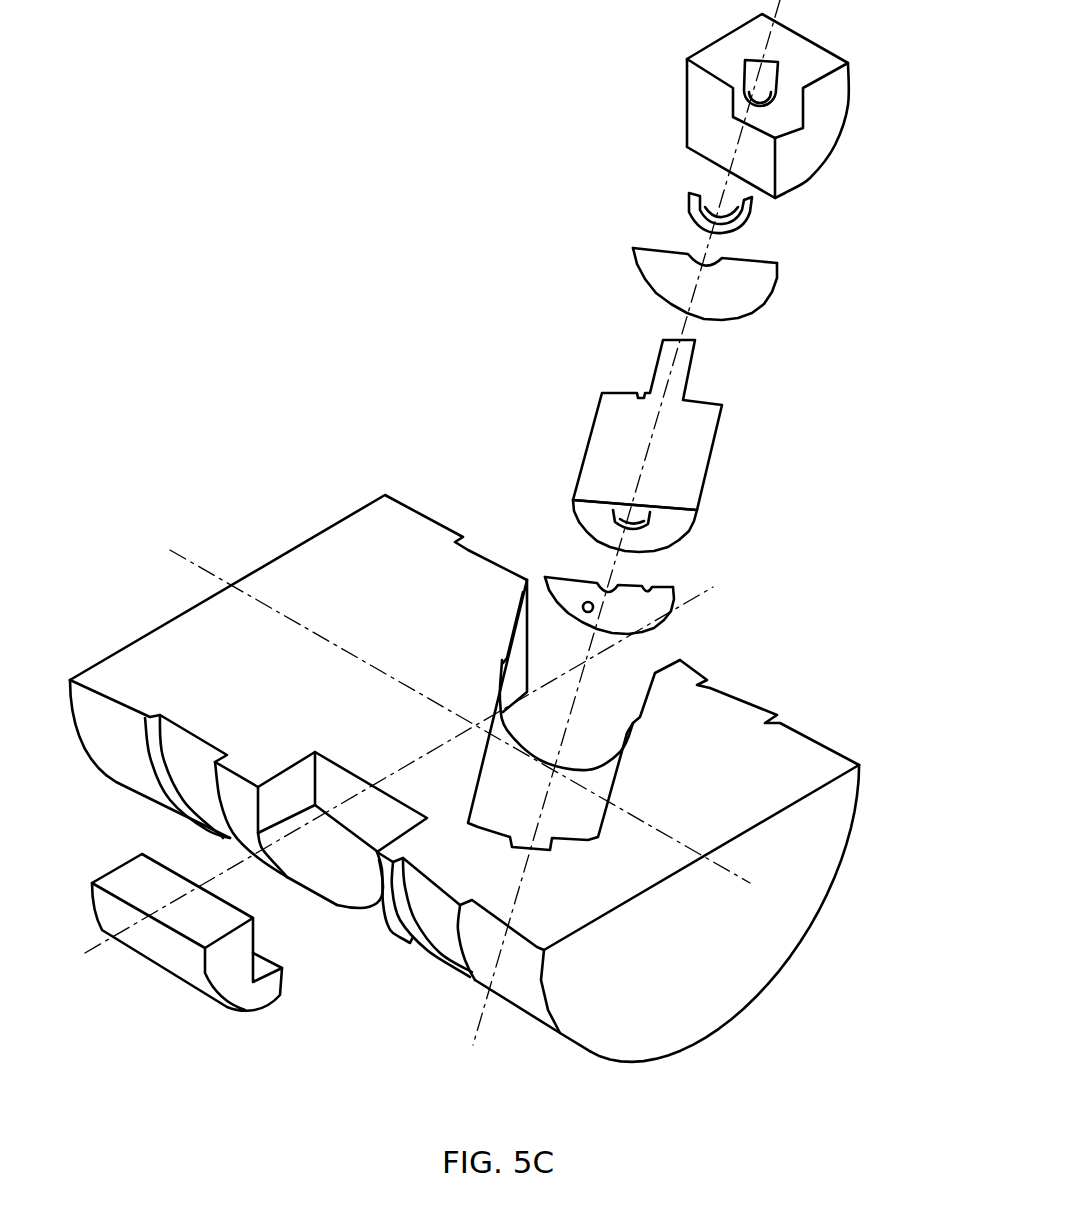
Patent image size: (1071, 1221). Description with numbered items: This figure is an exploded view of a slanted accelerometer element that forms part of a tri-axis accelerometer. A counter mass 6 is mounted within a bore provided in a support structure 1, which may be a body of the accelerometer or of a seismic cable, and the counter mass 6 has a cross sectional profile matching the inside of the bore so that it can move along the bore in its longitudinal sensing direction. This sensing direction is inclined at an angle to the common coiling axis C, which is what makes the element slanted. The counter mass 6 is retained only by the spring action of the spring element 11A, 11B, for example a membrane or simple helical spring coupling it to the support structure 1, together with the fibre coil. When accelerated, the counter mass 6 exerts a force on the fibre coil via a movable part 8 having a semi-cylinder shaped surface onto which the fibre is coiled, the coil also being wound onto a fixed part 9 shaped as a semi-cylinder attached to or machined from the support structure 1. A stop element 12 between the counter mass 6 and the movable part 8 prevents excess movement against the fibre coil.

The support structure 1 is at (362, 607).
The counter mass 6 is at (588, 440).
The movable part 8 is at (687, 87).
The fixed part 9 is at (185, 980).
The spring element 11A is at (672, 588).
The spring element 11B is at (633, 262).
The stop element 12 is at (690, 202).
The common coiling axis C is at (197, 564).